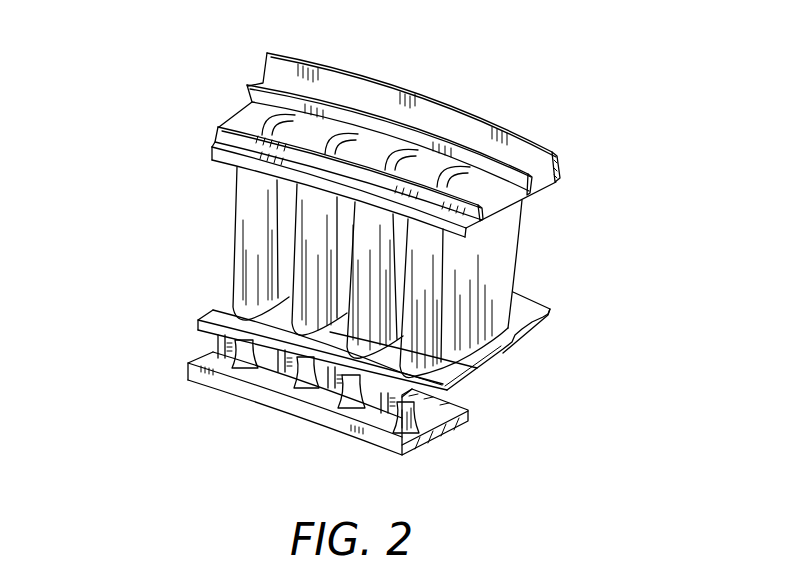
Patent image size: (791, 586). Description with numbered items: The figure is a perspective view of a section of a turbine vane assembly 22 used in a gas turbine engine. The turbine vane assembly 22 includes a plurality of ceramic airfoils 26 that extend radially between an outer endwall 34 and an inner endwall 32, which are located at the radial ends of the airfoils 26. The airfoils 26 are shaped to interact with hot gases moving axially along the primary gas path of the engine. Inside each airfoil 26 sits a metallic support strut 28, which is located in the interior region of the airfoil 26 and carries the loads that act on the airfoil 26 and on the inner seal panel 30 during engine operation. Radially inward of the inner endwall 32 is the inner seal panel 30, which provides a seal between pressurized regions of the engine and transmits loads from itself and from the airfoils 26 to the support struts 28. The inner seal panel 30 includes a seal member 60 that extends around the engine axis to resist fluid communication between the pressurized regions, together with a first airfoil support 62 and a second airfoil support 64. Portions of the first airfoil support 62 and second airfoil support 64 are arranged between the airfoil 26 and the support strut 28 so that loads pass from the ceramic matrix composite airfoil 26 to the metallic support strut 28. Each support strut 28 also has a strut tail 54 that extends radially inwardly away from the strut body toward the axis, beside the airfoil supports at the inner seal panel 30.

The turbine vane assembly 22 is at (155, 85).
The outer endwall 34 is at (558, 140).
The airfoil 26 is at (480, 246).
The support strut 28 is at (483, 278).
The inner endwall 32 is at (552, 328).
The inner seal panel 30 is at (481, 410).
The seal member 60 is at (217, 405).
The first airfoil support 62 is at (401, 440).
The strut tail 54 is at (381, 423).
The second airfoil support 64 is at (366, 413).